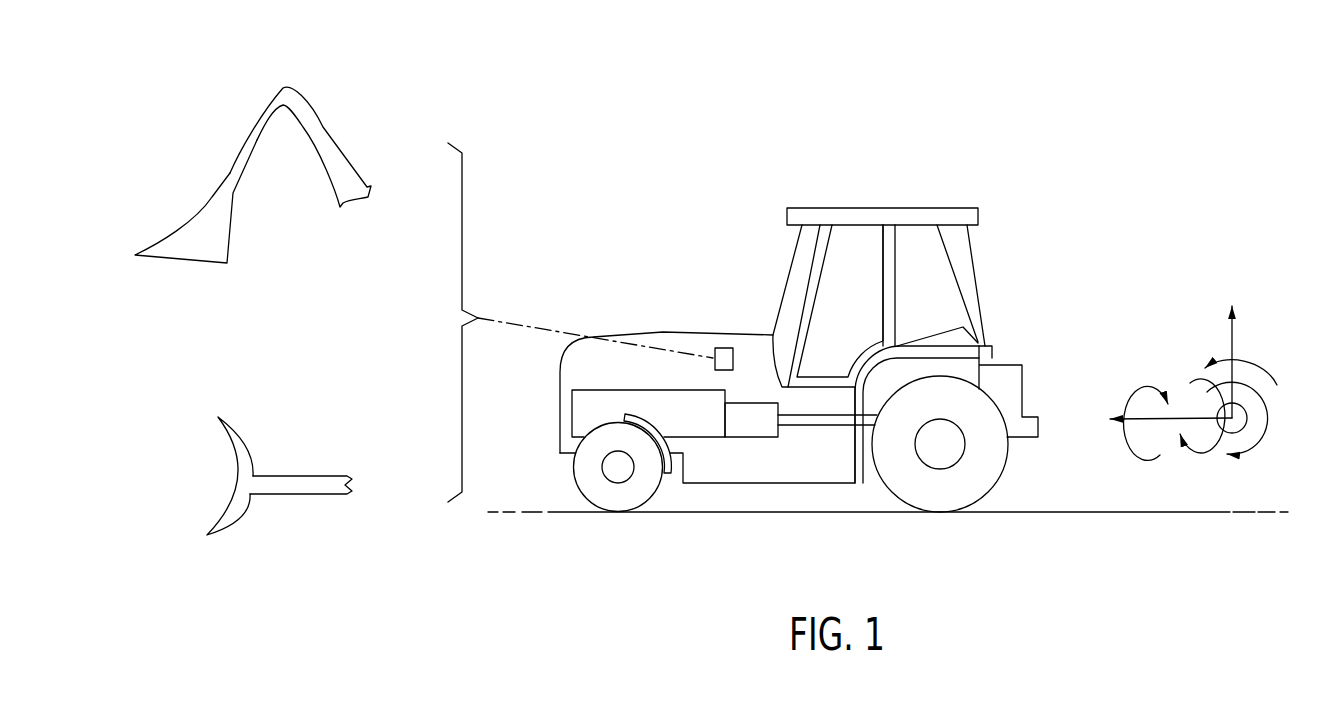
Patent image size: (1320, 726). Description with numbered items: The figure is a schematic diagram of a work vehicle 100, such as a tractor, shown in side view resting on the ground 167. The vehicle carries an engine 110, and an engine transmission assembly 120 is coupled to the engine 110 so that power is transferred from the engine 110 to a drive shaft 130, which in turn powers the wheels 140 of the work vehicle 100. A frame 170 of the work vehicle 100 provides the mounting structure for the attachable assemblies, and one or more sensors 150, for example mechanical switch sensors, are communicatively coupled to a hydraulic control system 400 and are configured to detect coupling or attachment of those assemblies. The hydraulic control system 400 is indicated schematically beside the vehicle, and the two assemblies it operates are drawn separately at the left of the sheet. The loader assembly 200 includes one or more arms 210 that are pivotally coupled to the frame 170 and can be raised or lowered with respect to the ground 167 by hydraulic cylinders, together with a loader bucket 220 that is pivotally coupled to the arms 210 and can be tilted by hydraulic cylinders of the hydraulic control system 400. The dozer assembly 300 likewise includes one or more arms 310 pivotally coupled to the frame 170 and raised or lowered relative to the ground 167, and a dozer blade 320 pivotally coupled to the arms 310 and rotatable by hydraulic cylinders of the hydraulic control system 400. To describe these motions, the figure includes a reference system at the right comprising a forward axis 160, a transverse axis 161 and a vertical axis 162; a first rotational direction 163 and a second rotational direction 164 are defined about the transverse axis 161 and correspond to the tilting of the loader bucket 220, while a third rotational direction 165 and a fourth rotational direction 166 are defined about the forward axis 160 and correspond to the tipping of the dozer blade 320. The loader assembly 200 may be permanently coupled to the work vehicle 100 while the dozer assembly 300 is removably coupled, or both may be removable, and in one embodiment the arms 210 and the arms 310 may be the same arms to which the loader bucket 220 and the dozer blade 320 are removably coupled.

The work vehicle 100 is at (793, 337).
The engine 110 is at (570, 413).
The engine transmission assembly 120 is at (750, 437).
The drive shaft 130 is at (827, 427).
The wheels 140 is at (582, 480).
The sensors 150 is at (729, 346).
The forward axis 160 is at (1132, 422).
The transverse axis 161 is at (1218, 432).
The vertical axis 162 is at (1228, 342).
The first rotational direction 163 is at (1260, 367).
The second rotational direction 164 is at (1267, 422).
The third rotational direction 165 is at (1147, 402).
The fourth rotational direction 166 is at (1192, 457).
The ground 167 is at (1137, 510).
The frame 170 is at (665, 330).
The loader assembly 200 is at (212, 156).
The arms 210 is at (330, 130).
The loader bucket 220 is at (182, 230).
The dozer assembly 300 is at (215, 456).
The arms 310 is at (303, 476).
The dozer blade 320 is at (232, 497).
The hydraulic control system 400 is at (575, 198).